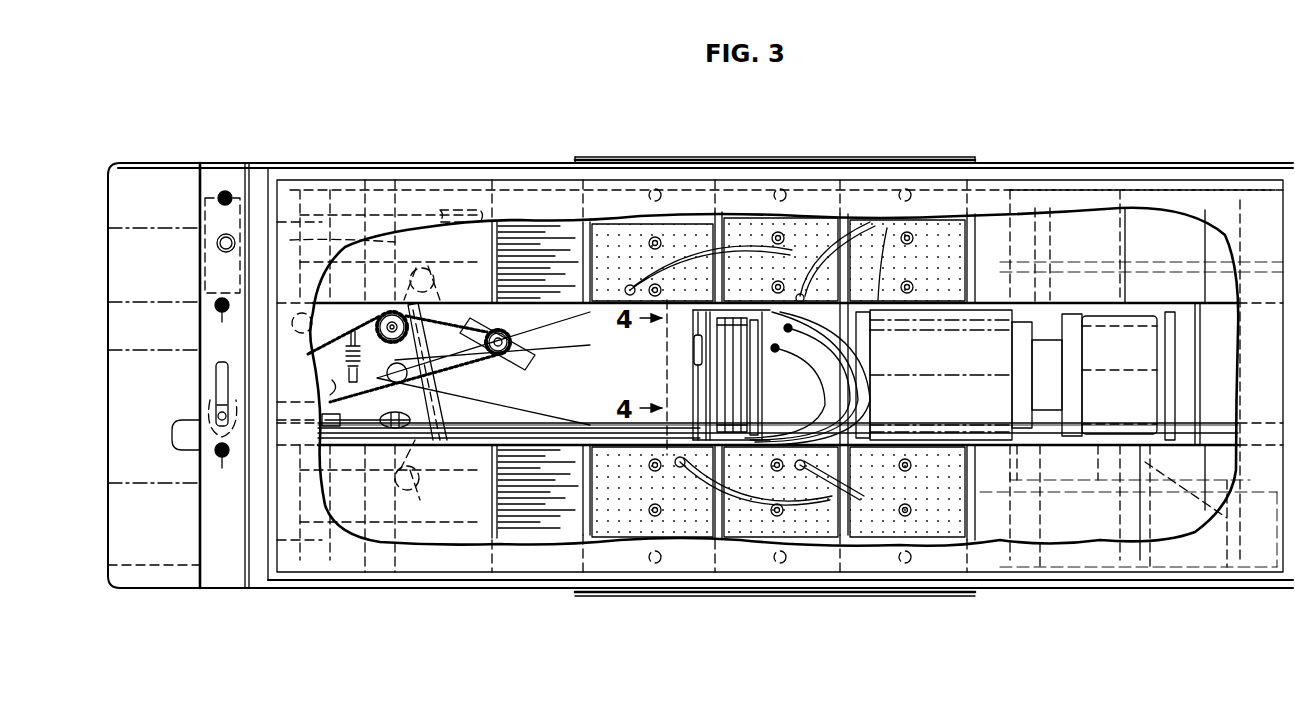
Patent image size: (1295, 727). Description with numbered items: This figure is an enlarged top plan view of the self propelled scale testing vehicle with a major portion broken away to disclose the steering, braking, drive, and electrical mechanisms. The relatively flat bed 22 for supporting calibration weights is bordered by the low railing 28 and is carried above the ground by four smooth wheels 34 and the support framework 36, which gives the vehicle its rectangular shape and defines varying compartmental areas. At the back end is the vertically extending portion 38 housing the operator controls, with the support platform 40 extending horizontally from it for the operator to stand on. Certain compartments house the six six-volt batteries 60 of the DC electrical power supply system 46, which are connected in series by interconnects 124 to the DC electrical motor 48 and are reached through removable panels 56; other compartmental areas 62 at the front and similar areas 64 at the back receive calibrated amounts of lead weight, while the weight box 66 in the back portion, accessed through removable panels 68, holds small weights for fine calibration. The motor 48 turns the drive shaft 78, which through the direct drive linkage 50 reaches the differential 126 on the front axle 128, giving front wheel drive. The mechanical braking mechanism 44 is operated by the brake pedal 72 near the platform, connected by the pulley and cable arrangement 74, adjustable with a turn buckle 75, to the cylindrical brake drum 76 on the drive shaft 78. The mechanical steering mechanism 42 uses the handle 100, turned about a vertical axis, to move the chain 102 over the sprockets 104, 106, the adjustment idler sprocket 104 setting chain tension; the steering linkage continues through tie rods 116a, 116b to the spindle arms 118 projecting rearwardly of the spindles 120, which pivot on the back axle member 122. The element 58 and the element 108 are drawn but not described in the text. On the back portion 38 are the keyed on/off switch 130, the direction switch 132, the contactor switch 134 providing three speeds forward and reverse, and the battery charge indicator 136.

The bed 22 is at (1172, 197).
The railing 28 is at (1096, 575).
The wheels 34 is at (385, 198).
The support framework 36 is at (1016, 163).
The vertically extending portion 38 is at (217, 568).
The support platform 40 is at (152, 578).
The steering mechanism 42 is at (346, 320).
The braking mechanism 44 is at (688, 348).
The DC electrical power supply system 46 is at (735, 190).
The DC electrical motor 48 is at (942, 362).
The direct drive linkage 50 is at (1045, 340).
The removable panels 56 is at (748, 160).
The top panel 58 is at (775, 146).
The batteries 60 is at (598, 237).
The compartmental areas 62 is at (1105, 228).
The compartmental areas 64 is at (470, 228).
The weight box 66 is at (212, 280).
The removable panels 68 is at (200, 540).
The brake pedal 72 is at (178, 437).
The pulley and cable arrangement 74 is at (600, 420).
The turn buckle 75 is at (778, 446).
The brake drum 76 is at (712, 374).
The drive shaft 78 is at (790, 382).
The handle 100 is at (215, 382).
The chain 102 is at (330, 396).
The idler sprocket 104 is at (380, 345).
The sprocket 106 is at (512, 340).
The bracket 108 is at (512, 356).
The tie rod 116a is at (385, 466).
The tie rod 116b is at (420, 272).
The spindle arms 118 is at (362, 245).
The spindles 120 is at (415, 252).
The back axle member 122 is at (420, 232).
The interconnects 124 is at (800, 250).
The differential 126 is at (1135, 366).
The front axle 128 is at (1222, 520).
The keyed on/off switch 130 is at (225, 190).
The direction switch 132 is at (218, 326).
The contactor switch 134 is at (216, 250).
The battery charge indicator 136 is at (218, 470).